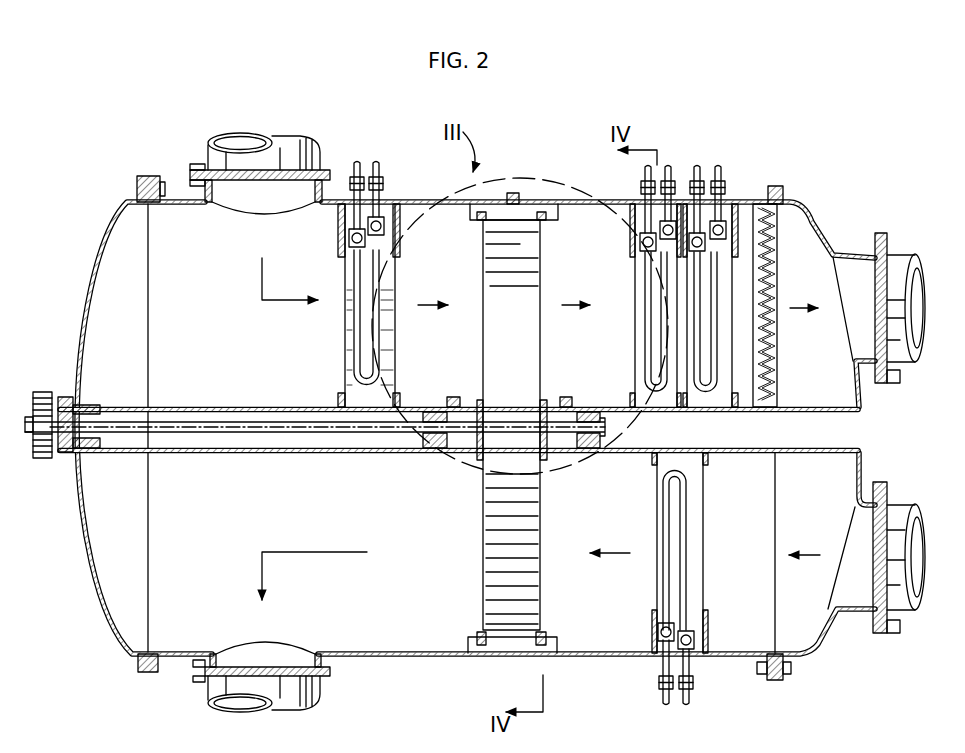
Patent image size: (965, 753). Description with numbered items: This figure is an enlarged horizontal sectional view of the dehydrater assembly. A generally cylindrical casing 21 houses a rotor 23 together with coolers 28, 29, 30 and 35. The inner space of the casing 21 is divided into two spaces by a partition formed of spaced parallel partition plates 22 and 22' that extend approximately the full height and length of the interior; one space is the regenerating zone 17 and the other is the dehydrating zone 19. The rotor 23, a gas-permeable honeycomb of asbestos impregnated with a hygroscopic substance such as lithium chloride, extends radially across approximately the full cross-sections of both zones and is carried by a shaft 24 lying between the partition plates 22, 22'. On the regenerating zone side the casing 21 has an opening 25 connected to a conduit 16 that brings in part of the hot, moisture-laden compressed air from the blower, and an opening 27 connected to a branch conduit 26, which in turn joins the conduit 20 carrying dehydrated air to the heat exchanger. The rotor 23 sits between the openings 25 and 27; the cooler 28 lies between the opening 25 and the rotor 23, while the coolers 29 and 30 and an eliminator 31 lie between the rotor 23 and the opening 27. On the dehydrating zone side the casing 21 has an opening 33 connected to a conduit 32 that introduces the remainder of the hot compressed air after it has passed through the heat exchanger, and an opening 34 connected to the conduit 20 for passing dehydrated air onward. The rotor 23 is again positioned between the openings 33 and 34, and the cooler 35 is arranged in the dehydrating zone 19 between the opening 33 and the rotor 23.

The conduit 16 is at (208, 152).
The regenerating zone 17 is at (222, 309).
The dehydrating zone 19 is at (380, 509).
The conduit 20 is at (208, 688).
The casing 21 is at (612, 200).
The partition plate 22 is at (459, 451).
The partition plate 22' is at (459, 378).
The rotor 23 is at (530, 348).
The shaft 24 is at (275, 434).
The opening 25 is at (243, 202).
The branch conduit 26 is at (893, 262).
The opening 27 is at (830, 268).
The cooler 28 is at (385, 345).
The cooler 29 is at (638, 285).
The cooler 30 is at (728, 317).
The eliminator 31 is at (768, 352).
The conduit 32 is at (895, 505).
The opening 33 is at (837, 558).
The opening 34 is at (288, 632).
The cooler 35 is at (700, 577).